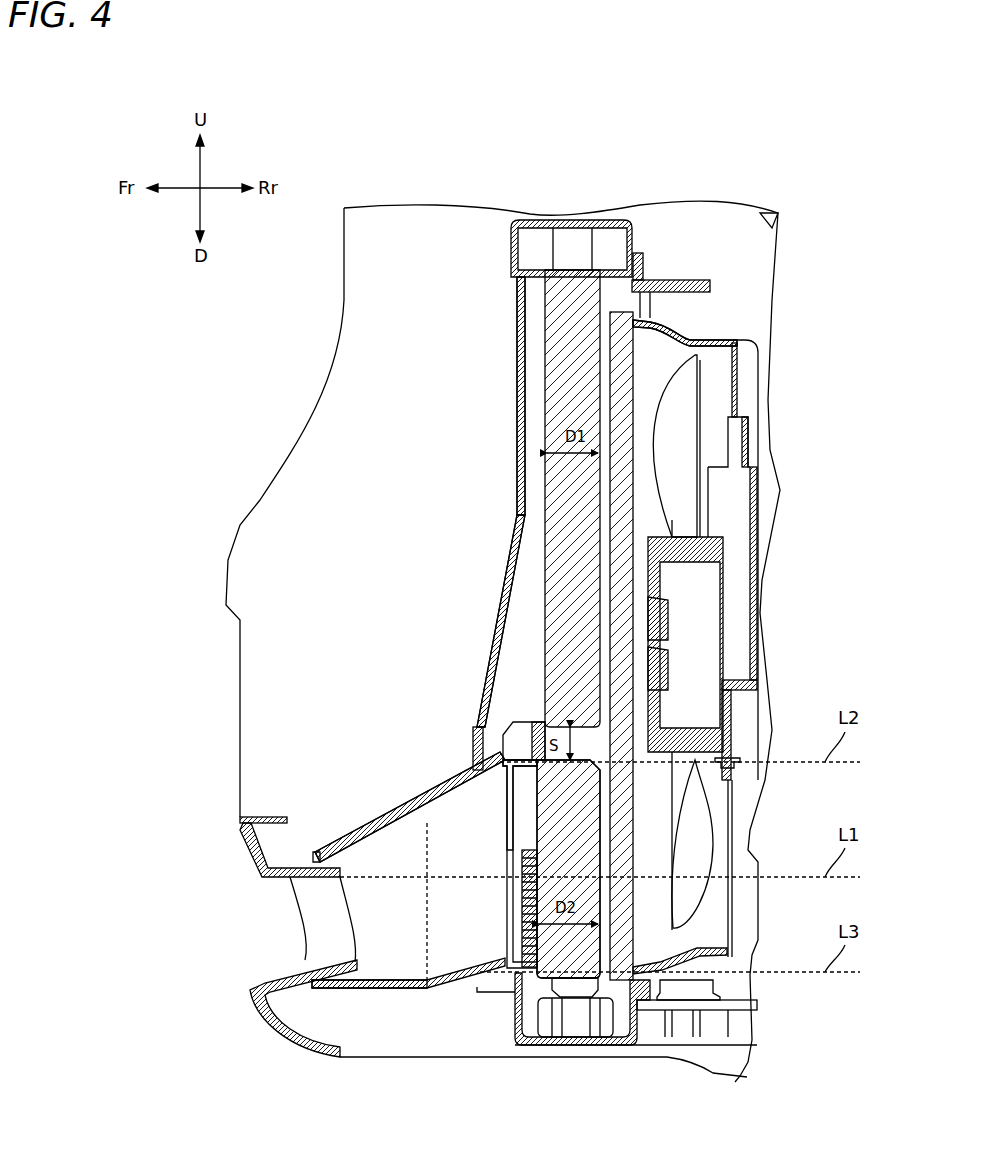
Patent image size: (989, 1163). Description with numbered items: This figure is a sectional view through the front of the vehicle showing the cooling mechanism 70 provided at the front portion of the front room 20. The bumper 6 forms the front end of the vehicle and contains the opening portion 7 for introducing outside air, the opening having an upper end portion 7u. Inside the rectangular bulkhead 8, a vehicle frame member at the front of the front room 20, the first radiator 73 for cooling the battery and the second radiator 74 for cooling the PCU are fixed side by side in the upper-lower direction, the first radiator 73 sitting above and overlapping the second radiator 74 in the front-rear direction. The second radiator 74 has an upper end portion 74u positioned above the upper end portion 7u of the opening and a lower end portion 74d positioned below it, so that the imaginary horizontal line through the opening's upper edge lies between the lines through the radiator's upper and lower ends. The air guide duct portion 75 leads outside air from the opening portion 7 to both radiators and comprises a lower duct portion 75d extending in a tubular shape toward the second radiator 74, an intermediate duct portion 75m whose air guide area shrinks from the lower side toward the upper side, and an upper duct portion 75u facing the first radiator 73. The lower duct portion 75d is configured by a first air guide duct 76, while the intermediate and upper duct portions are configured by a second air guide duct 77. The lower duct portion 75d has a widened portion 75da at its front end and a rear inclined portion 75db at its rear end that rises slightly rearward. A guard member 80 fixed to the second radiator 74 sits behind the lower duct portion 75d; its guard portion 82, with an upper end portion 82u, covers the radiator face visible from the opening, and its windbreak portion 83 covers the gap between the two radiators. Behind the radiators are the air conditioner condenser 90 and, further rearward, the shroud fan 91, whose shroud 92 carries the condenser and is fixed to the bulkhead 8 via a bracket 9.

The bumper 6 is at (236, 824).
The opening portion 7 is at (266, 940).
The upper end portion of the opening portion 7u is at (272, 877).
The bulkhead 8 is at (543, 219).
The bracket 9 is at (667, 290).
The front room 20 is at (716, 226).
The cooling mechanism 70 is at (626, 220).
The first radiator 73 is at (636, 262).
The second radiator 74 is at (578, 1000).
The upper end portion of the second radiator 74u is at (603, 724).
The lower end portion of the second radiator 74d is at (562, 1000).
The air guide duct portion 75 is at (492, 990).
The upper duct portion 75u is at (517, 347).
The intermediate duct portion 75m is at (492, 643).
The lower duct portion 75d is at (373, 830).
The widened portion 75da is at (323, 850).
The rear inclined portion 75db is at (440, 977).
The first air guide duct 76 is at (410, 807).
The second air guide duct 77 is at (501, 502).
The guard member 80 is at (522, 932).
The guard portion 82 is at (505, 905).
The upper end portion of the guard portion 82u is at (520, 850).
The windbreak portion 83 is at (520, 720).
The air conditioner condenser 90 is at (628, 452).
The shroud fan 91 is at (748, 382).
The shroud 92 is at (690, 326).